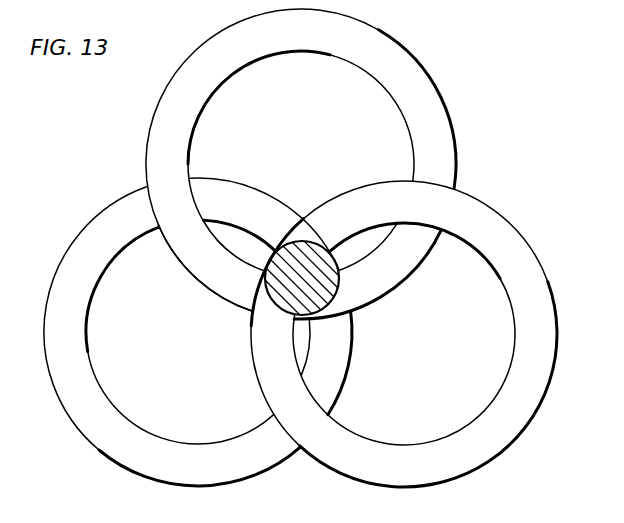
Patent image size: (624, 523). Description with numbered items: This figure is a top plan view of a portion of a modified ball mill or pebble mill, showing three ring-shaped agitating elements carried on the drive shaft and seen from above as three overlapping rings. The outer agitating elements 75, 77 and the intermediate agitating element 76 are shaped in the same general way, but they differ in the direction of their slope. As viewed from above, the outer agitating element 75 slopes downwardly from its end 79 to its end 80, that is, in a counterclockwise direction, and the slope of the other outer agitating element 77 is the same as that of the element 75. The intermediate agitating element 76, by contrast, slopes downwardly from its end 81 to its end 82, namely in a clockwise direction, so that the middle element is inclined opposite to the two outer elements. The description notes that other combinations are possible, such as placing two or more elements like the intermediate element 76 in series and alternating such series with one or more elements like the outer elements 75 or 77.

The outer agitating element 75 is at (533, 424).
The intermediate agitating element 76 is at (452, 101).
The outer agitating element 77 is at (76, 430).
The end 79 is at (276, 347).
The end 80 is at (346, 229).
The end 81 is at (236, 282).
The end 82 is at (374, 291).